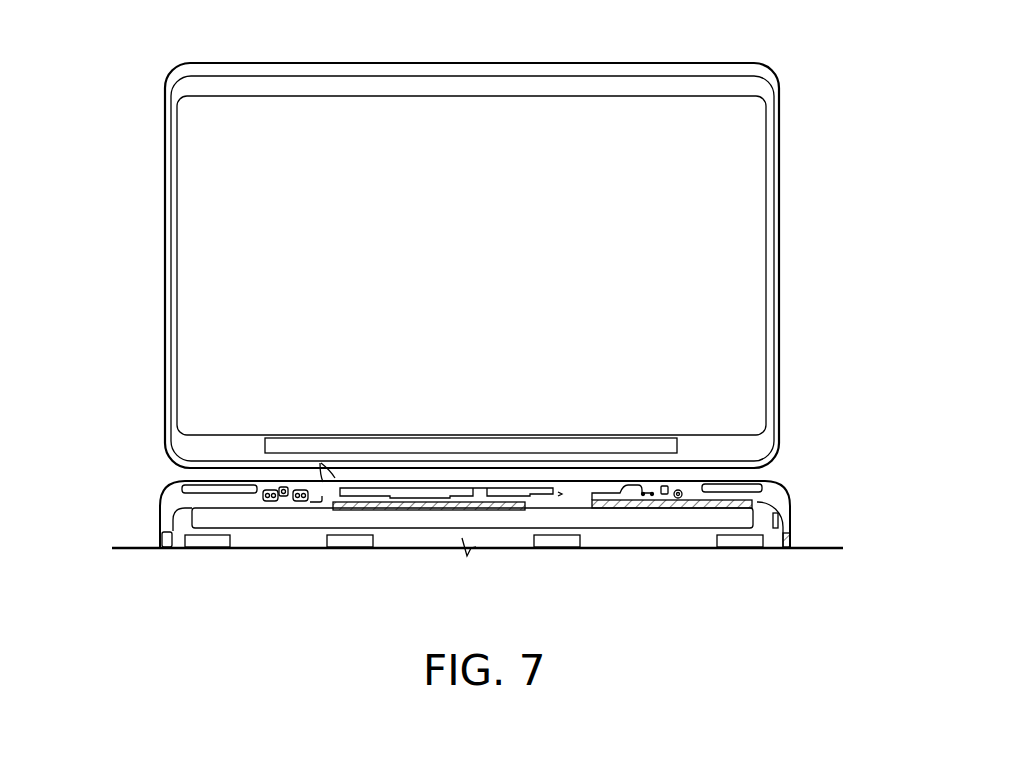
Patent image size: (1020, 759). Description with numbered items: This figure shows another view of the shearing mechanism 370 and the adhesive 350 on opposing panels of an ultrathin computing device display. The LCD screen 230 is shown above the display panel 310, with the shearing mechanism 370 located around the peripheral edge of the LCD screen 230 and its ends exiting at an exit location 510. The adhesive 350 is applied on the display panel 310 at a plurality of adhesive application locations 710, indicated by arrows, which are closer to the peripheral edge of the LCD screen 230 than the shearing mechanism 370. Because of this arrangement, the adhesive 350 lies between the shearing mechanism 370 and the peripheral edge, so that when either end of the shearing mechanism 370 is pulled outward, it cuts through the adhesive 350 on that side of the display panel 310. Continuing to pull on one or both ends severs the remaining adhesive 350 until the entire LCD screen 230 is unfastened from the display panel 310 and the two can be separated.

The LCD screen 230 is at (783, 288).
The shearing mechanism 370 is at (772, 445).
The display panel 310 is at (790, 492).
The adhesive 350 is at (160, 542).
The exit location 510 is at (314, 458).
The adhesive application locations 710 is at (158, 524).